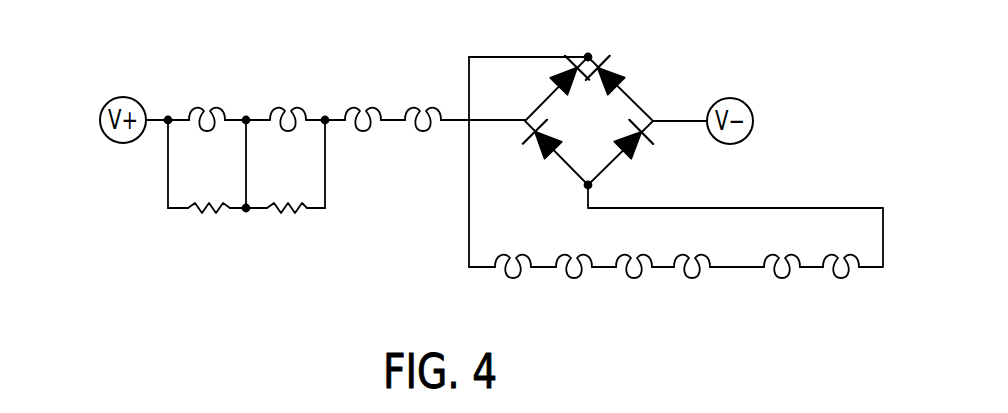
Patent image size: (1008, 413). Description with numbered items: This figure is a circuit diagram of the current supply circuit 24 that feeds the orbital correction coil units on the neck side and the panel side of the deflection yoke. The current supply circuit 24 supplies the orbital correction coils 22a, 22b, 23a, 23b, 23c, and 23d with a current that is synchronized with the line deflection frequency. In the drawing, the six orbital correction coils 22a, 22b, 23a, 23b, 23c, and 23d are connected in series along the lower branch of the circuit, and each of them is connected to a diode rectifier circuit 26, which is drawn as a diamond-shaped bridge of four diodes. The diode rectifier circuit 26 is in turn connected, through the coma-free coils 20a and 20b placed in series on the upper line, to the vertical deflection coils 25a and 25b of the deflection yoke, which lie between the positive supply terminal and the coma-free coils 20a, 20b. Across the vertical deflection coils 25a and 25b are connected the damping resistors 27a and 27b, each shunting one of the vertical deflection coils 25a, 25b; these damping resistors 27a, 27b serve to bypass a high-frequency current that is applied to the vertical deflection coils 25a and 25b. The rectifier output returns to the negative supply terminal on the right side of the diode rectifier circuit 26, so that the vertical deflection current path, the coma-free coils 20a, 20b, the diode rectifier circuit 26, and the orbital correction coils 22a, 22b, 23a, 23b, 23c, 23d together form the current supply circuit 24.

The coma-free coil 20a is at (372, 107).
The coma-free coil 20b is at (430, 107).
The orbital correction coil 22a is at (782, 256).
The orbital correction coil 22b is at (841, 280).
The orbital correction coil 23a is at (513, 256).
The orbital correction coil 23b is at (574, 280).
The orbital correction coil 23c is at (634, 256).
The orbital correction coil 23d is at (692, 280).
The current supply circuit 24 is at (634, 94).
The vertical deflection coil 25a is at (217, 107).
The vertical deflection coil 25b is at (297, 107).
The diode rectifier circuit 26 is at (613, 53).
The damping resistor 27a is at (207, 215).
The damping resistor 27b is at (283, 215).